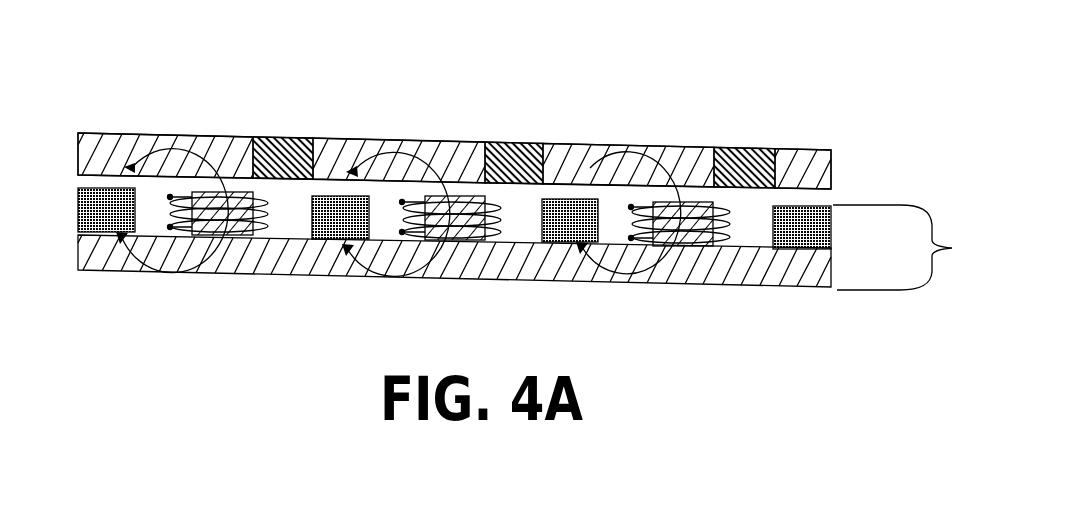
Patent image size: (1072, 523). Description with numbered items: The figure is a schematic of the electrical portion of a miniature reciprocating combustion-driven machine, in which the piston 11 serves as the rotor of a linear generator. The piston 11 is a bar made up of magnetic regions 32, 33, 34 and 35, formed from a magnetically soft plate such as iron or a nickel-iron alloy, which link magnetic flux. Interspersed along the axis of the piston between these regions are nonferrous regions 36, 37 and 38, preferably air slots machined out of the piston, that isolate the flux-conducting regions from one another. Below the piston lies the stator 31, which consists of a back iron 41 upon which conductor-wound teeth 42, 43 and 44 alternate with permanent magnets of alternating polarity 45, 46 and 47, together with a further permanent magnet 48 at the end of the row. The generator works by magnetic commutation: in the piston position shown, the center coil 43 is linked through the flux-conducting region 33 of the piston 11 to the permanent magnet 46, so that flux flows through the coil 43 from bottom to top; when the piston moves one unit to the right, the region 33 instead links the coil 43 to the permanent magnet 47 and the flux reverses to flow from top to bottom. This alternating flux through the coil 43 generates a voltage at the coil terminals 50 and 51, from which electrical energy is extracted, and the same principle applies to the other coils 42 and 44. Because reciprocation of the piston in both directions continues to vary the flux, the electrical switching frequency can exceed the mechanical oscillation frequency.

The piston 11 is at (495, 138).
The stator 31 is at (540, 195).
The magnetic region 32 is at (163, 135).
The magnetic region 33 is at (402, 140).
The magnetic region 34 is at (610, 142).
The magnetic region 35 is at (787, 152).
The nonferrous region 36 is at (280, 140).
The nonferrous region 37 is at (512, 140).
The nonferrous region 38 is at (737, 152).
The back iron 41 is at (840, 258).
The conductor-wound tooth 42 is at (233, 192).
The center coil 43 is at (400, 200).
The conductor-wound tooth 44 is at (698, 205).
The permanent magnet 45 is at (108, 192).
The permanent magnet 46 is at (333, 197).
The permanent magnet 47 is at (573, 205).
The stator permanent magnet 48 is at (820, 207).
The coil terminal 50 is at (402, 202).
The coil terminal 51 is at (402, 233).